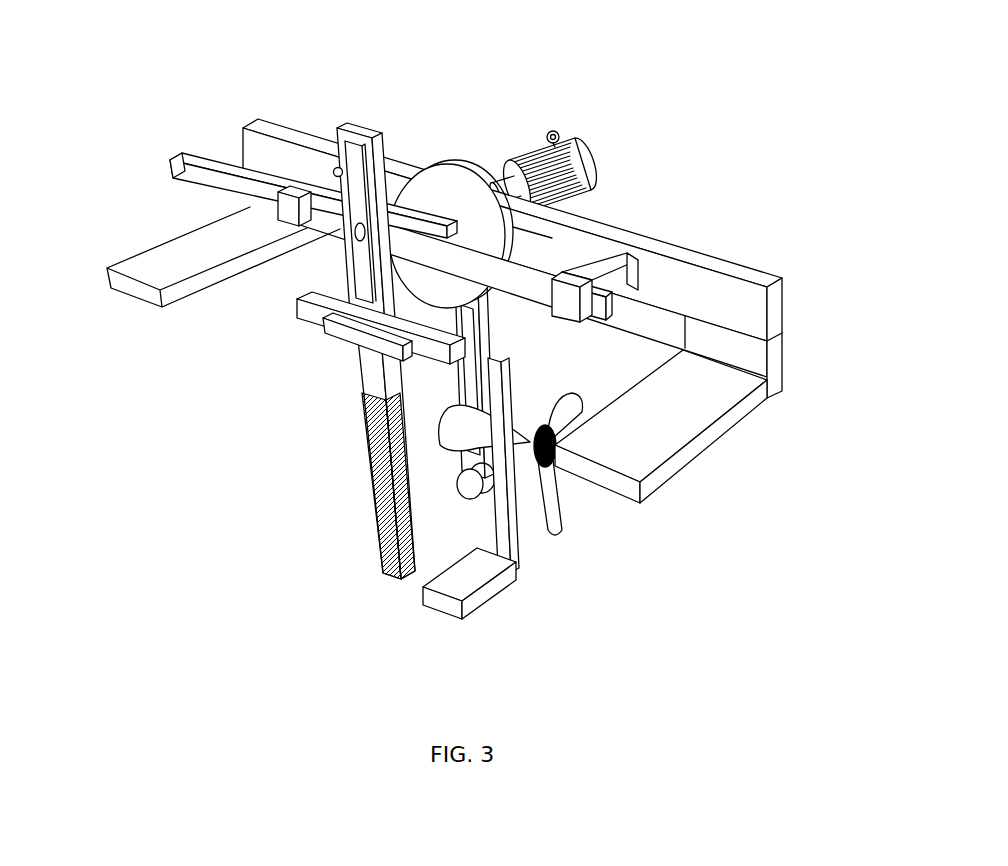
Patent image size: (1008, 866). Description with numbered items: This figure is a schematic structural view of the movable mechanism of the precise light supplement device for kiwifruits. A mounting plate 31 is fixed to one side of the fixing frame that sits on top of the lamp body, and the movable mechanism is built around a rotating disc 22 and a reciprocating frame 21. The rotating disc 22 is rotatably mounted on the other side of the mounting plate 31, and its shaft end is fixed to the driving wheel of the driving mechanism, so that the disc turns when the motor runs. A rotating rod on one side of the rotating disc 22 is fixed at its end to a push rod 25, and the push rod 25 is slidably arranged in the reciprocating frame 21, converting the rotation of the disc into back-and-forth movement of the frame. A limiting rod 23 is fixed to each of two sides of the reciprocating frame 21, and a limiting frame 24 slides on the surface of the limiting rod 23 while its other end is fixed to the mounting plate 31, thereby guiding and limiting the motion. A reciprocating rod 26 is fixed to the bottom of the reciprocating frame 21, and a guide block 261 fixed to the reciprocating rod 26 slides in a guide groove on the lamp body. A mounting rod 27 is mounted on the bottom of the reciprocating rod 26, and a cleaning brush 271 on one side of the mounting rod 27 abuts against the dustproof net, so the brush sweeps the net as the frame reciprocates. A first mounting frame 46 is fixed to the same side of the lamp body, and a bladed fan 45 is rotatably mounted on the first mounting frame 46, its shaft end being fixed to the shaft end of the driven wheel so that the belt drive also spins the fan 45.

The mounting plate 31 is at (702, 278).
The reciprocating frame 21 is at (360, 127).
The rotating disc 22 is at (442, 183).
The limiting rod 23 is at (530, 158).
The limiting frame 24 is at (598, 276).
The push rod 25 is at (356, 226).
The reciprocating rod 26 is at (297, 313).
The guide block 261 is at (324, 330).
The mounting rod 27 is at (376, 372).
The cleaning brush 271 is at (378, 540).
The fan 45 is at (533, 463).
The first mounting frame 46 is at (472, 575).